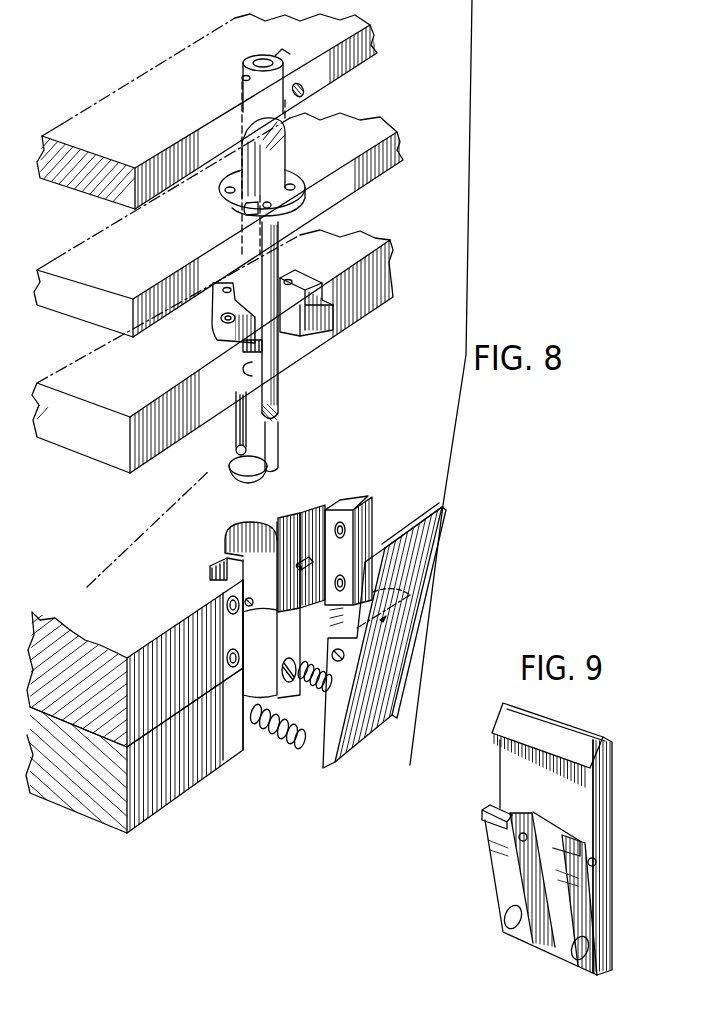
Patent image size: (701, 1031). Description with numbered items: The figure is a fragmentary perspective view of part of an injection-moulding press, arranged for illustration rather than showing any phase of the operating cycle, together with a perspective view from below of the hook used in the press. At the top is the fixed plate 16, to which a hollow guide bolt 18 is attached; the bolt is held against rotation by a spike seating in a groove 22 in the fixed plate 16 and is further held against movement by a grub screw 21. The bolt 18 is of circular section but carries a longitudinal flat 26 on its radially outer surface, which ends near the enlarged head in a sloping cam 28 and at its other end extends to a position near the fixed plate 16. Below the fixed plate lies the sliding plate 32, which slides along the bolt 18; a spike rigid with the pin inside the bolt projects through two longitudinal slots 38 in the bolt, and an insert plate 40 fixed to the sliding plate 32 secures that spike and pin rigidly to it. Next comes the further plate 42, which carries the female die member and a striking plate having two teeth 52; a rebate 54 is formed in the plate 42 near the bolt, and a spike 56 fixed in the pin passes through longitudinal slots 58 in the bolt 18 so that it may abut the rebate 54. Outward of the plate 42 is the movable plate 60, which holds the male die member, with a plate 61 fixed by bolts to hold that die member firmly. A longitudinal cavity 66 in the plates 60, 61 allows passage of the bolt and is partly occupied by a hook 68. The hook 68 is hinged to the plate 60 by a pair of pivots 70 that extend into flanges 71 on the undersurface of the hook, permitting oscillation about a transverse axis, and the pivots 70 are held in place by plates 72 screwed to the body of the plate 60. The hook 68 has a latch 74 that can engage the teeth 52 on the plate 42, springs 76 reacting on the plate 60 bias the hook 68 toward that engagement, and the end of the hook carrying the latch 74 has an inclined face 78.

In FIG. 8, the fixed plate 16 is at (203, 153).
In FIG. 8, the hollow guide bolt 18 is at (298, 447).
In FIG. 8, the grub screw 21 is at (329, 96).
In FIG. 8, the groove 22 is at (242, 152).
In FIG. 8, the longitudinal flat 26 is at (298, 320).
In FIG. 8, the sloping cam 28 is at (302, 422).
In FIG. 8, the sliding plate 32 is at (213, 270).
In FIG. 8, the longitudinal slots 38 is at (236, 163).
In FIG. 8, the insert plate 40 is at (298, 198).
In FIG. 8, the further plate 42 is at (211, 396).
In FIG. 8, the teeth 52 is at (305, 335).
In FIG. 8, the rebate 54 is at (270, 361).
In FIG. 8, the spike 56 is at (272, 476).
In FIG. 8, the longitudinal slots 58 is at (219, 427).
In FIG. 8, the movable plate 60 is at (131, 655).
In FIG. 8, the plate 61 is at (131, 757).
In FIG. 8, the longitudinal cavity 66 is at (262, 601).
In FIG. 8, the hook 68 is at (410, 650).
In FIG. 9, the hook 68 is at (616, 856).
In FIG. 8, the pivots 70 is at (275, 578).
In FIG. 9, the flanges 71 is at (520, 857).
In FIG. 8, the plates 72 is at (273, 613).
In FIG. 9, the latch 74 is at (523, 796).
In FIG. 8, the springs 76 is at (291, 722).
In FIG. 8, the inclined face 78 is at (407, 524).
In FIG. 9, the inclined face 78 is at (551, 748).